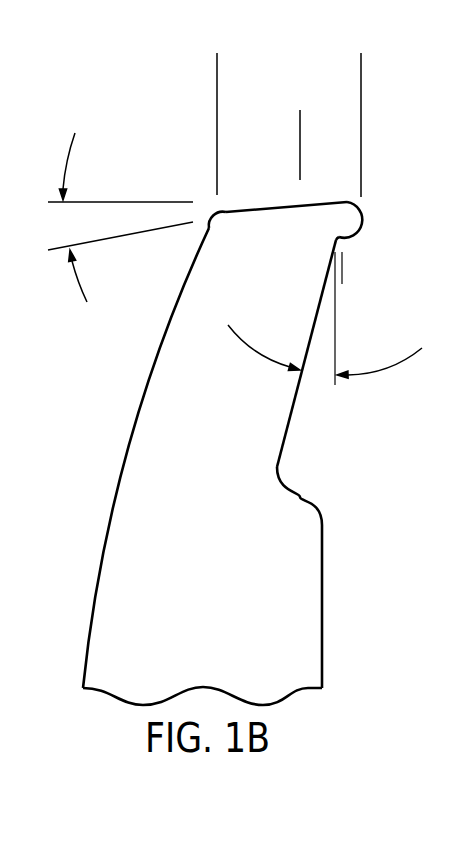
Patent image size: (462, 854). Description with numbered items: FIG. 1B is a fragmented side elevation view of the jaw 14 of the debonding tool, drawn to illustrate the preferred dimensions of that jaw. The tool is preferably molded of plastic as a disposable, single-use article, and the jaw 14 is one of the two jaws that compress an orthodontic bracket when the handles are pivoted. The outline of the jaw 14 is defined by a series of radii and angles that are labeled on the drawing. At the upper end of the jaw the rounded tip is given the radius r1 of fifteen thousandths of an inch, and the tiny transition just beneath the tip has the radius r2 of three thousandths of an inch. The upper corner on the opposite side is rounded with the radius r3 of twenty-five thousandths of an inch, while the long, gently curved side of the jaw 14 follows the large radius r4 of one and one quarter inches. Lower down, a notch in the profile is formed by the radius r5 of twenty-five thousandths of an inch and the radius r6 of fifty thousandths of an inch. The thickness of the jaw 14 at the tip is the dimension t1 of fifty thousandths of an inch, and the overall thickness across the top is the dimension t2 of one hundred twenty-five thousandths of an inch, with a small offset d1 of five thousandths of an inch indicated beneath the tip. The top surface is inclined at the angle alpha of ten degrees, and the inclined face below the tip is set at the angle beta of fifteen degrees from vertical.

The jaw 14 is at (82, 407).
The radius r1 is at (373, 202).
The radius r2 is at (328, 224).
The radius r3 is at (211, 208).
The radius r4 is at (162, 375).
The radius r5 is at (265, 476).
The radius r6 is at (332, 510).
The thickness t1 is at (350, 125).
The thickness t2 is at (350, 66).
The dimension d1 is at (262, 258).
The angle α alpha is at (119, 217).
The angle β beta is at (325, 357).